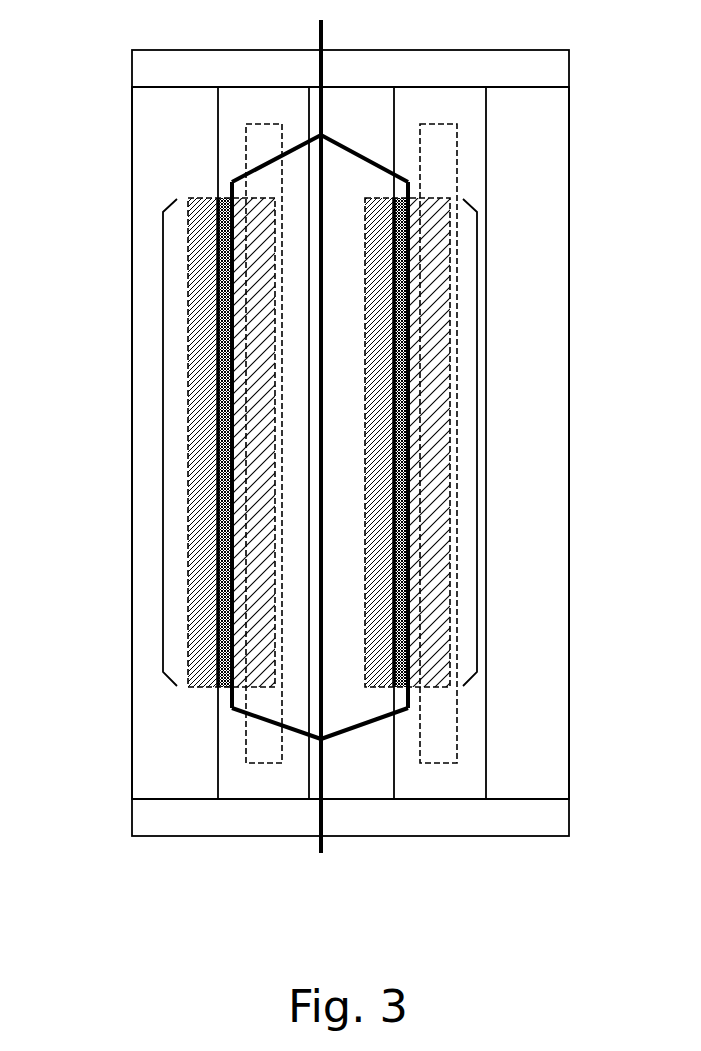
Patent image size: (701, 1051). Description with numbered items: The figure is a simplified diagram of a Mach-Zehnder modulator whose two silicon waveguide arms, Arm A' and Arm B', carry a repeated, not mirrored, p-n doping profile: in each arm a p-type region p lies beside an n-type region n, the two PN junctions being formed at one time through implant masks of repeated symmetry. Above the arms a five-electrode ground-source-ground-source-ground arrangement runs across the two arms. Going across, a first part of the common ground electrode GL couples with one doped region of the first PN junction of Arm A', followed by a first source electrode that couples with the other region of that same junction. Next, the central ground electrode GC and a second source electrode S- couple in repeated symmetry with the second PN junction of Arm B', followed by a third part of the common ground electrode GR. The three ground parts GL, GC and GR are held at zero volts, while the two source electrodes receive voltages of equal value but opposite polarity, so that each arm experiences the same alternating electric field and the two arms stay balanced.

The first part of the common ground electrode GL is at (175, 443).
The third part of the common ground electrode GR is at (527, 443).
The central ground electrode GC is at (320, 436).
The second source electrode S- is at (438, 443).
The first modulator arm Arm A' is at (150, 445).
The second modulator arm Arm B' is at (517, 445).
The p-type region p is at (208, 668).
The n-type region n is at (241, 668).